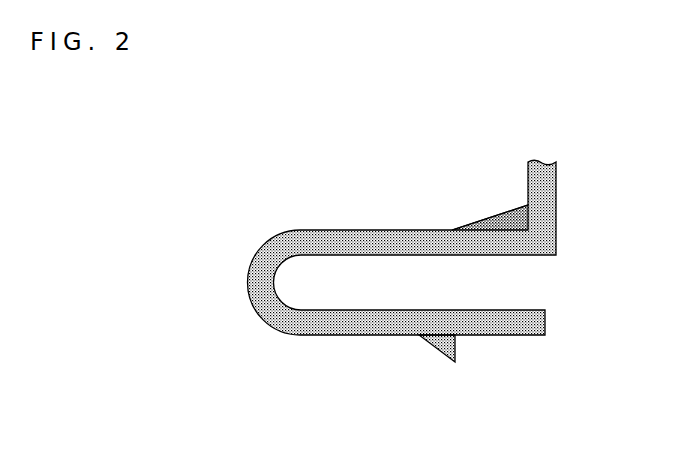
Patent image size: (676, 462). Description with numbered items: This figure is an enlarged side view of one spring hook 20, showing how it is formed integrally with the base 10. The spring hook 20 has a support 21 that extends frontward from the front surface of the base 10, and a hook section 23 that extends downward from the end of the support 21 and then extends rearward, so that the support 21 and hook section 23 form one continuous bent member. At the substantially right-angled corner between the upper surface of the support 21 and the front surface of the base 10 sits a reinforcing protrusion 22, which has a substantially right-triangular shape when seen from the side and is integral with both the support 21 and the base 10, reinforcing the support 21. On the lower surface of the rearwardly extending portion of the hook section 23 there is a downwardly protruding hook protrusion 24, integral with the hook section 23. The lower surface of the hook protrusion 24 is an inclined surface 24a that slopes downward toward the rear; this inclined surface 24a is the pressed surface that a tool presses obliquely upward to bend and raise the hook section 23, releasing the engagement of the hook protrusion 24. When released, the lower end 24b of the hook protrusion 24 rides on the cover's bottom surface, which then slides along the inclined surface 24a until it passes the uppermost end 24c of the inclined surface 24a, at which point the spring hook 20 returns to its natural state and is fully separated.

The spring hook 20 is at (444, 263).
The base 10 is at (545, 185).
The support 21 is at (410, 237).
The reinforcing protrusion 22 is at (505, 220).
The hook section 23 is at (350, 336).
The hook protrusion 24 is at (452, 344).
The inclined surface 24a is at (437, 350).
The lower end 24b is at (455, 362).
The uppermost end 24c is at (419, 336).